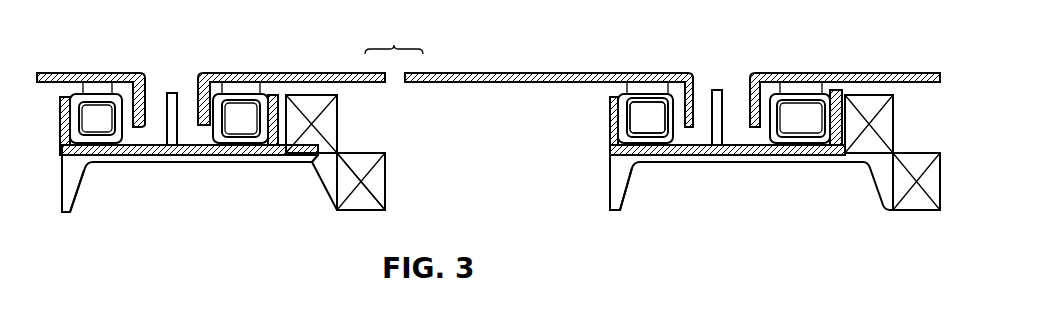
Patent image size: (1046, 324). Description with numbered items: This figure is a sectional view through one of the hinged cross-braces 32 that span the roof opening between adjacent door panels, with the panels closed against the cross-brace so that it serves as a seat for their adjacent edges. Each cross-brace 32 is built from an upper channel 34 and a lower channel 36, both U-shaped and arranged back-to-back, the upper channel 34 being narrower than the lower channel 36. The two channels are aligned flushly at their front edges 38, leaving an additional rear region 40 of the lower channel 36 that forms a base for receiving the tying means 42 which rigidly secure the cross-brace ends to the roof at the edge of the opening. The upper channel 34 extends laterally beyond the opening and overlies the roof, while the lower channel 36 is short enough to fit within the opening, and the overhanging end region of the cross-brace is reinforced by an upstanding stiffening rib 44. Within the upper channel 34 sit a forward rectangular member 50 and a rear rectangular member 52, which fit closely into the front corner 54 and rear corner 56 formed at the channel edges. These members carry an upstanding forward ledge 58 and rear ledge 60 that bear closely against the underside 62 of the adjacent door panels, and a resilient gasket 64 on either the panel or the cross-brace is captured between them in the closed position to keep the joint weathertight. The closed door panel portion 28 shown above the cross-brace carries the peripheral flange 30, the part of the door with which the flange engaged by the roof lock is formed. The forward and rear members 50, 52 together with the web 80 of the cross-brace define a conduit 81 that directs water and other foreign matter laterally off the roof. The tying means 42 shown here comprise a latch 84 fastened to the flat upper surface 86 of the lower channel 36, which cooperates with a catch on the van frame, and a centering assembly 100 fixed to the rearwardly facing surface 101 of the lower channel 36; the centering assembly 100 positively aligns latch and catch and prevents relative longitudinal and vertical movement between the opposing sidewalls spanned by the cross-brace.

The cover plate 28 is at (479, 66).
The peripheral flange 30 is at (714, 107).
The cross-brace 32 is at (150, 204).
The upper channel 34 is at (155, 145).
The lower channel 36 is at (245, 164).
The front edges 38 is at (58, 168).
The rear region 40 is at (300, 146).
The tying means 42 is at (382, 139).
The stiffening rib 44 is at (173, 128).
The forward rectangular member 50 is at (146, 143).
The rear rectangular member 52 is at (284, 104).
The front corner 54 is at (630, 128).
The rear corner 56 is at (886, 80).
The forward ledge 58 is at (83, 92).
The rear ledge 60 is at (232, 96).
The underside 62 is at (550, 90).
The resilient gasket 64 is at (102, 85).
The web 80 is at (170, 150).
The conduit 81 is at (735, 130).
The latch 84 is at (338, 97).
The flat upper surface 86 is at (317, 156).
The centering assembly 100 is at (390, 186).
The rearwardly facing surface 101 is at (365, 181).